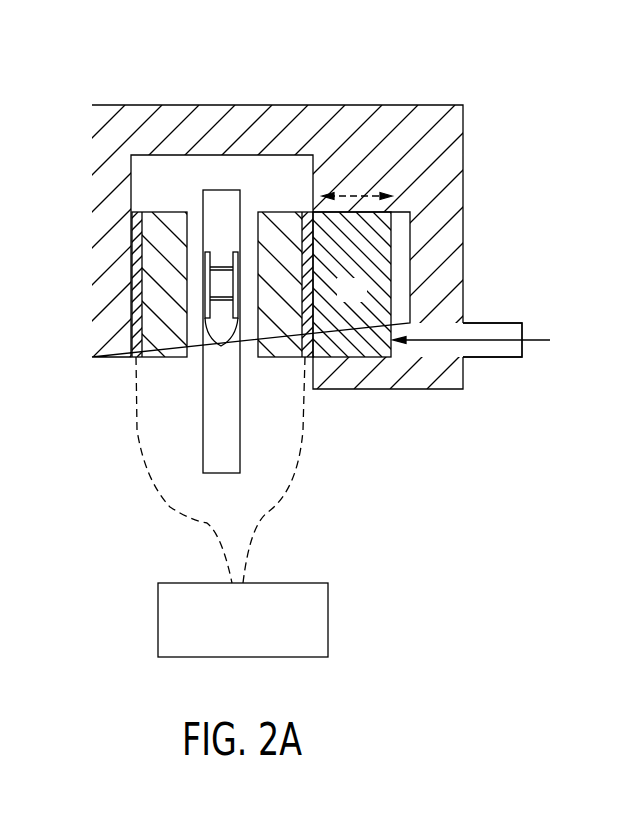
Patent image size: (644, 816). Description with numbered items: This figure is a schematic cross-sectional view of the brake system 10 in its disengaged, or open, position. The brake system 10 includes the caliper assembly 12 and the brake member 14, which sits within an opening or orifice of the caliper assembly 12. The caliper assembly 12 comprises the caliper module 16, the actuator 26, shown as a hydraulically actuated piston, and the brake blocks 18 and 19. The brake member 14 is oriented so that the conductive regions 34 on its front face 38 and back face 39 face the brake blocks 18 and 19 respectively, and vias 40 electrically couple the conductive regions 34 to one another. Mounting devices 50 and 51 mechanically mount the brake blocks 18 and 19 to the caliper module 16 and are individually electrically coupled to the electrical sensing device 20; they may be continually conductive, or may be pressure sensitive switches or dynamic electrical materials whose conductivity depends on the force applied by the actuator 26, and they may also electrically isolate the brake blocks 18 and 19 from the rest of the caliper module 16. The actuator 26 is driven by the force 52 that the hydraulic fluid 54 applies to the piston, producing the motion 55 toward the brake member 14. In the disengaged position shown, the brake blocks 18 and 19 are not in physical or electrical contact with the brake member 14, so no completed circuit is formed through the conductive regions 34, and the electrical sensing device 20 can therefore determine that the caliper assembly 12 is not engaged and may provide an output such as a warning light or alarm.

The brake system 10 is at (226, 45).
The caliper assembly 12 is at (486, 188).
The brake member 14 is at (210, 473).
The caliper module 16 is at (447, 133).
The brake block 18 is at (152, 212).
The brake block 19 is at (293, 212).
The electrical sensing device 20 is at (158, 618).
The actuator 26 is at (363, 299).
The conductive regions 34 is at (221, 313).
The front face 38 is at (186, 392).
The back face 39 is at (257, 392).
The vias 40 is at (230, 298).
The mounting device 50 is at (136, 212).
The mounting device 51 is at (305, 212).
The force 52 is at (497, 340).
The hydraulic fluid 54 is at (478, 335).
The motion 55 is at (358, 194).